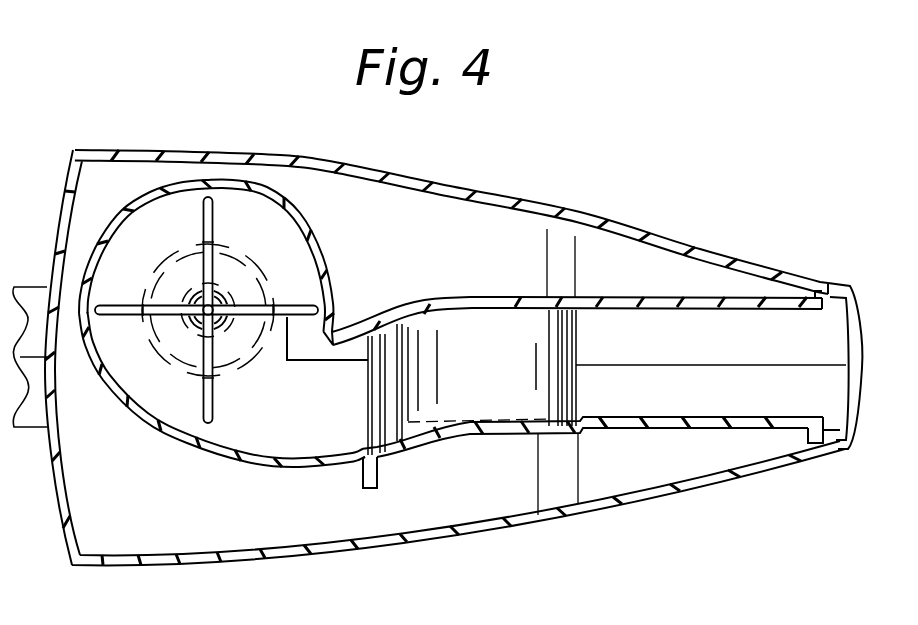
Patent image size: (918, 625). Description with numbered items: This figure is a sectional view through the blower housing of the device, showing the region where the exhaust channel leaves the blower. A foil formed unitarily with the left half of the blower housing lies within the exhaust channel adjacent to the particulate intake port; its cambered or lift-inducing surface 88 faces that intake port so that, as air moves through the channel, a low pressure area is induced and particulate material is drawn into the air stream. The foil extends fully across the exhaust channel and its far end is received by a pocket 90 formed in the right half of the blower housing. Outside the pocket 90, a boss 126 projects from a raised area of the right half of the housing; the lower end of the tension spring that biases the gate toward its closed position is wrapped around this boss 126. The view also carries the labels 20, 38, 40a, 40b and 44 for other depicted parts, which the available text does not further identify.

The hair dryer housing 20 is at (458, 532).
The fan impeller 38 is at (200, 413).
The lower blower housing portion 40a is at (282, 443).
The upper blower housing portion 40b is at (313, 333).
The outlet nozzle 44 is at (693, 428).
The cambered or lift-inducing surface 88 is at (537, 331).
The pocket 90 is at (550, 422).
The boss 126 is at (370, 490).